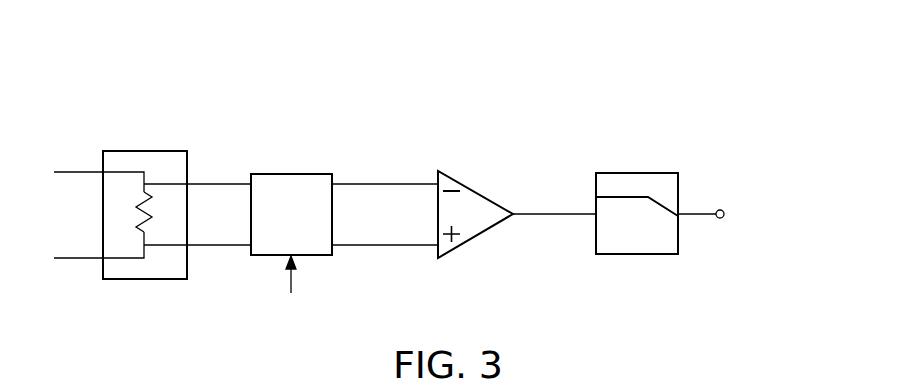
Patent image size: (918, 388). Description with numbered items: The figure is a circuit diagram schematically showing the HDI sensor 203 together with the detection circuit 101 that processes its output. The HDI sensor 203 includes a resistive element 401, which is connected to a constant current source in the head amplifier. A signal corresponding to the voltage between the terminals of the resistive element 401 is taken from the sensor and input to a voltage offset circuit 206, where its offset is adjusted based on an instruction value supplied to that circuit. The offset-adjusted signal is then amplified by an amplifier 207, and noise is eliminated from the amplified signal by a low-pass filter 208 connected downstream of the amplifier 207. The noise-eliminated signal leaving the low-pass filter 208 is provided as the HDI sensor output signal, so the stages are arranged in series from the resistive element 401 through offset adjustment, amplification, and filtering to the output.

The detection circuit 101 is at (600, 88).
The HDI sensor 203 is at (117, 151).
The resistive element 401 is at (129, 218).
The voltage offset circuit 206 is at (291, 174).
The amplifier 207 is at (491, 198).
The low-pass filter 208 is at (657, 173).